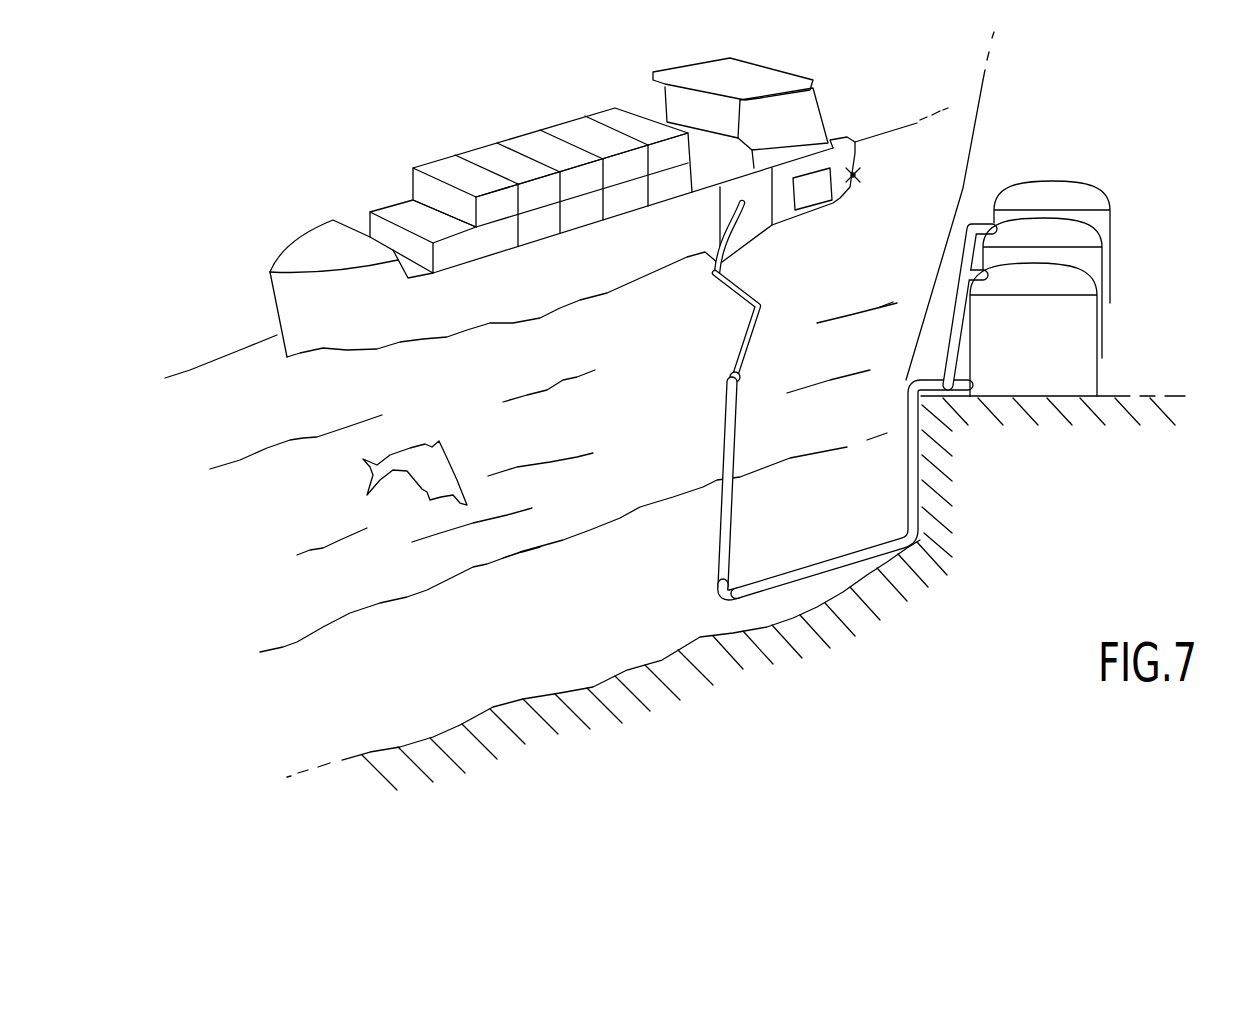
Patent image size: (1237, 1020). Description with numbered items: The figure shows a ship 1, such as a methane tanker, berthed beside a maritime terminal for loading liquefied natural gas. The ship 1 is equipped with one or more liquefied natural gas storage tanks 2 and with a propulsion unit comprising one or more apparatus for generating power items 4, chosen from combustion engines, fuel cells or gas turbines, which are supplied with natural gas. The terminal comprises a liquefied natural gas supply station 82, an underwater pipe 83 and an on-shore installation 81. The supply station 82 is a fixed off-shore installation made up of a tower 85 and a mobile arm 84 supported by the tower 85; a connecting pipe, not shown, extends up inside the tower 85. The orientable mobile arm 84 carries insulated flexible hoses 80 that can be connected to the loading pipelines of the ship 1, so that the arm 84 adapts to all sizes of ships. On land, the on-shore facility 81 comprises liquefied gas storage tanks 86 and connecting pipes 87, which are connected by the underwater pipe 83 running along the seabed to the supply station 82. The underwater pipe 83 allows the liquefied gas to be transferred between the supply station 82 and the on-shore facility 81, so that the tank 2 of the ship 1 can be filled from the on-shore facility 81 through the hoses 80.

The ship 1 is at (455, 128).
The liquefied natural gas storage tank 2 is at (755, 208).
The apparatus for generating power 4 is at (815, 185).
The insulated flexible hose 80 is at (726, 253).
The on-shore installation 81 is at (1066, 247).
The liquefied natural gas supply station 82 is at (718, 435).
The underwater pipe 83 is at (806, 572).
The mobile arm 84 is at (738, 341).
The tower 85 is at (716, 524).
The liquefied gas storage tank 86 is at (1067, 335).
The connecting pipe 87 is at (964, 242).